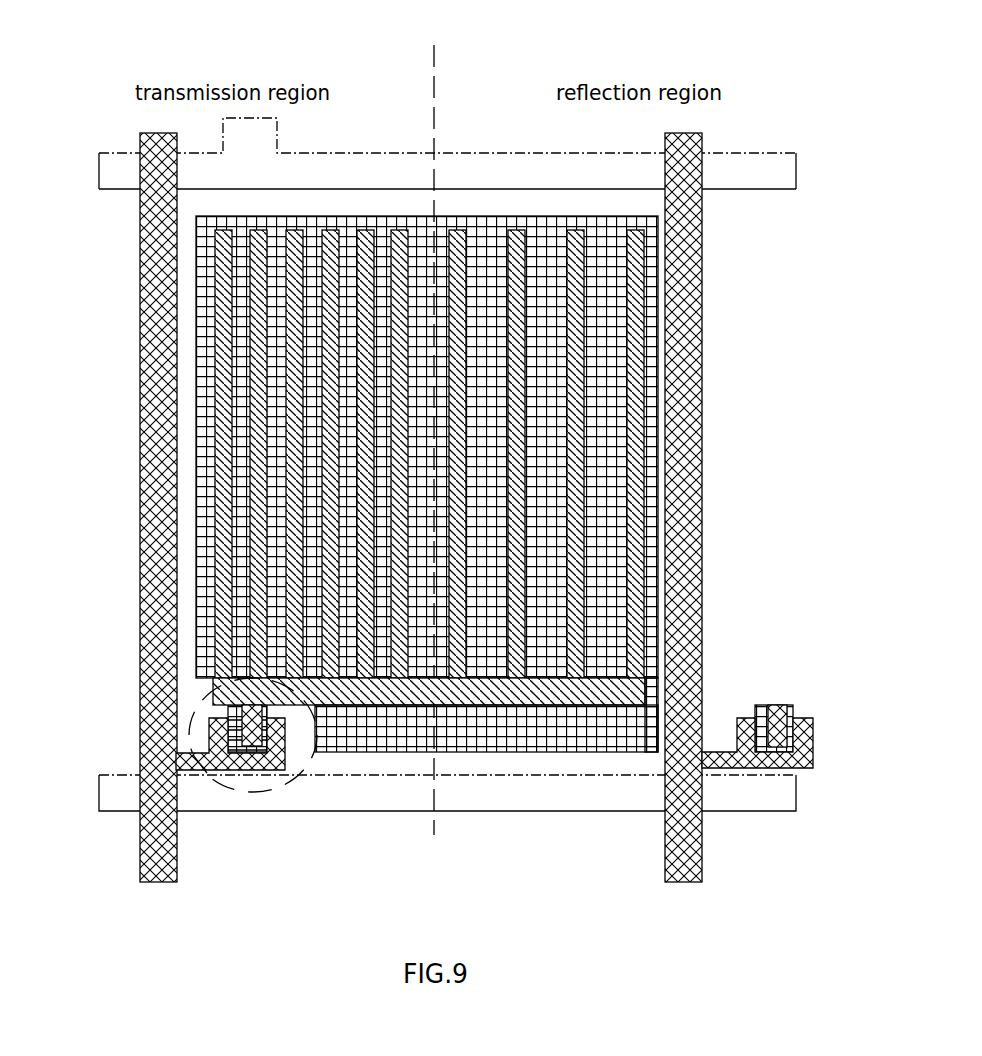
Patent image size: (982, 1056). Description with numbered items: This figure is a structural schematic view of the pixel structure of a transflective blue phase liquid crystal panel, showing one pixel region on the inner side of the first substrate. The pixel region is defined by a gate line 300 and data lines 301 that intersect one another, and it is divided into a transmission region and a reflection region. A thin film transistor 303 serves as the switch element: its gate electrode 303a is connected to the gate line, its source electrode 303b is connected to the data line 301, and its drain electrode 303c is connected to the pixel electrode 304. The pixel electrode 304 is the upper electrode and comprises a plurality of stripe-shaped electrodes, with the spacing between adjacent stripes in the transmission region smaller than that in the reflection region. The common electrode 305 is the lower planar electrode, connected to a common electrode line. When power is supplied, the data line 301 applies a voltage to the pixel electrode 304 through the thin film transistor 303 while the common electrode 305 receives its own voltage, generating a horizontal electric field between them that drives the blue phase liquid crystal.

The gate line 300 is at (117, 790).
The data line 301 is at (138, 865).
The thin film transistor 303 is at (229, 787).
The gate electrode 303a is at (238, 773).
The source electrode 303b is at (263, 768).
The drain electrode 303c is at (283, 740).
The pixel electrode 304 is at (210, 488).
The common electrode 305 is at (702, 283).